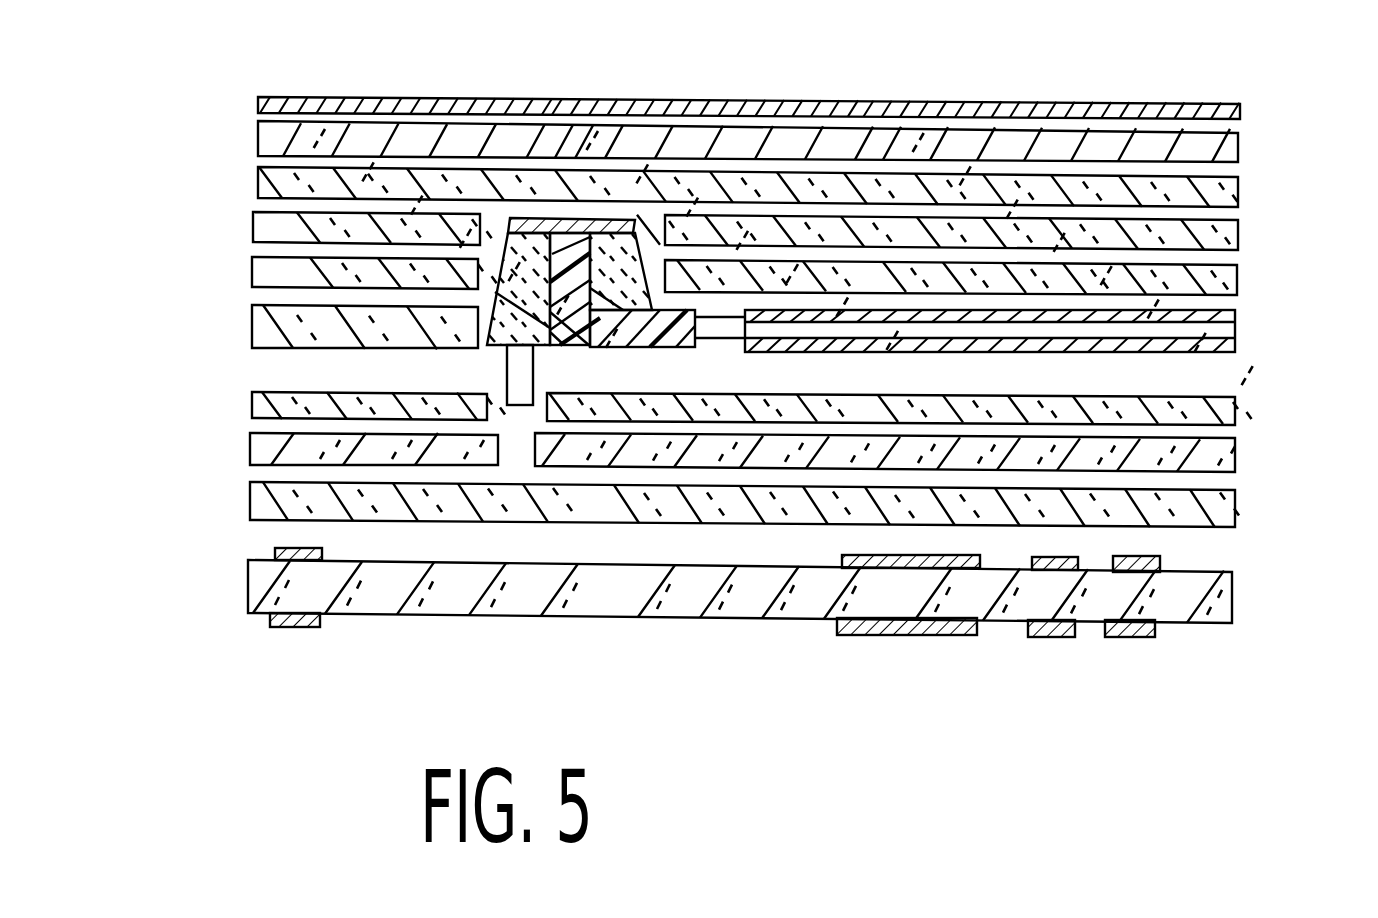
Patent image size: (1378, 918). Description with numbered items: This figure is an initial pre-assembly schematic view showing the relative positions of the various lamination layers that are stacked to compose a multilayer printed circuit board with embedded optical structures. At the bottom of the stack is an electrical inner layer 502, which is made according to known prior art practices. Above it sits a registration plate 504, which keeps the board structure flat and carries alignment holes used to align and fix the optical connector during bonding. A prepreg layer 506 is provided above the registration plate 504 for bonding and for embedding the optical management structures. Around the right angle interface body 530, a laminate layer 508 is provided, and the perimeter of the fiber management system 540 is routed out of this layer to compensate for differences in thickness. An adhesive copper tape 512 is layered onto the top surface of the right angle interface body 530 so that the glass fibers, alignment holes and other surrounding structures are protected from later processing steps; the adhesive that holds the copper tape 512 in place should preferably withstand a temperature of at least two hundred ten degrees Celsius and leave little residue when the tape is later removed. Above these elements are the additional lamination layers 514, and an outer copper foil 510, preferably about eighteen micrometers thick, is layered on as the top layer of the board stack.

The electrical inner layer 502 is at (678, 618).
The registration plate 504 is at (1235, 455).
The prepreg layer 506 is at (1233, 413).
The laminate layer 508 is at (252, 322).
The outer copper foil 510 is at (1115, 104).
The adhesive copper tape 512 is at (608, 240).
The additional lamination layers 514 is at (1238, 148).
The right angle interface body 530 is at (640, 240).
The fiber management system 540 is at (1217, 312).